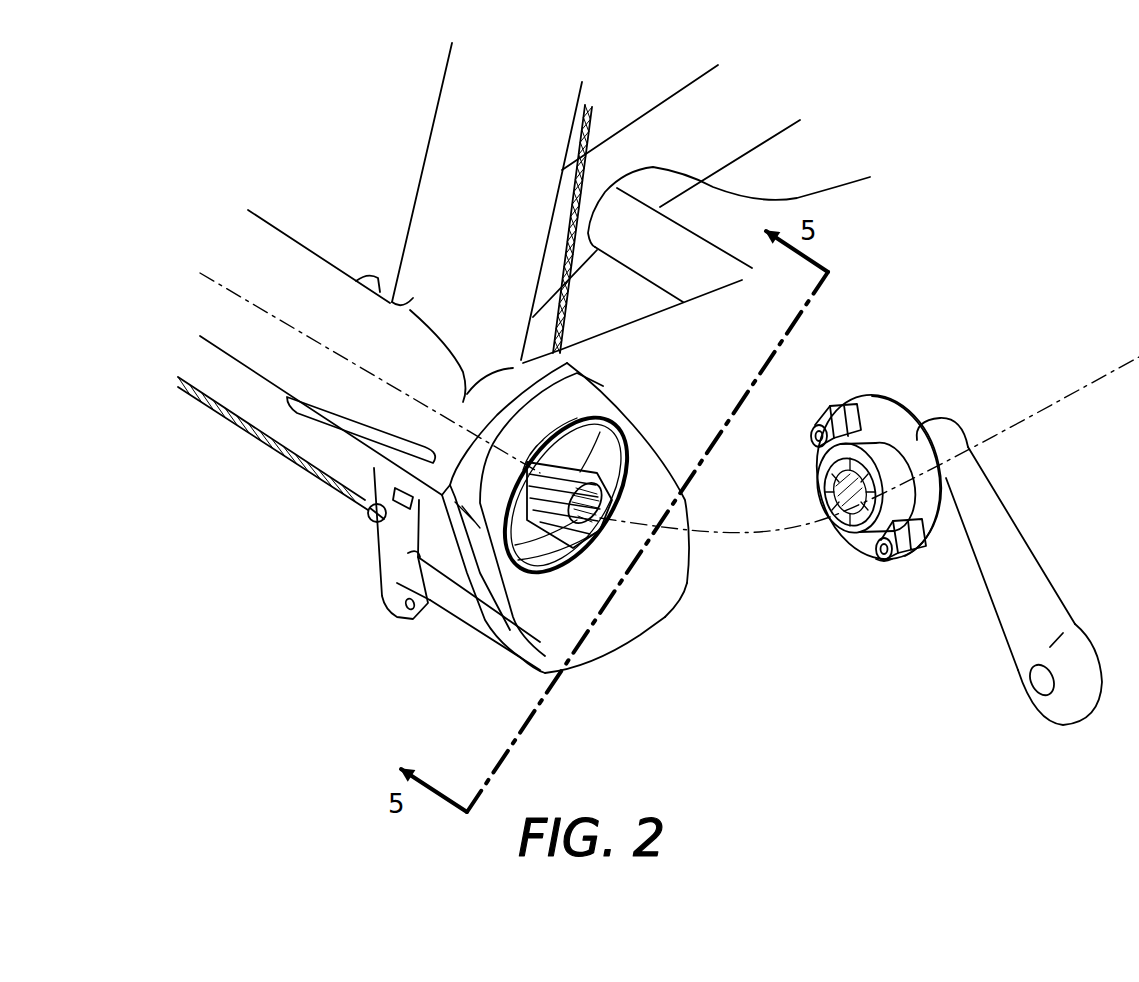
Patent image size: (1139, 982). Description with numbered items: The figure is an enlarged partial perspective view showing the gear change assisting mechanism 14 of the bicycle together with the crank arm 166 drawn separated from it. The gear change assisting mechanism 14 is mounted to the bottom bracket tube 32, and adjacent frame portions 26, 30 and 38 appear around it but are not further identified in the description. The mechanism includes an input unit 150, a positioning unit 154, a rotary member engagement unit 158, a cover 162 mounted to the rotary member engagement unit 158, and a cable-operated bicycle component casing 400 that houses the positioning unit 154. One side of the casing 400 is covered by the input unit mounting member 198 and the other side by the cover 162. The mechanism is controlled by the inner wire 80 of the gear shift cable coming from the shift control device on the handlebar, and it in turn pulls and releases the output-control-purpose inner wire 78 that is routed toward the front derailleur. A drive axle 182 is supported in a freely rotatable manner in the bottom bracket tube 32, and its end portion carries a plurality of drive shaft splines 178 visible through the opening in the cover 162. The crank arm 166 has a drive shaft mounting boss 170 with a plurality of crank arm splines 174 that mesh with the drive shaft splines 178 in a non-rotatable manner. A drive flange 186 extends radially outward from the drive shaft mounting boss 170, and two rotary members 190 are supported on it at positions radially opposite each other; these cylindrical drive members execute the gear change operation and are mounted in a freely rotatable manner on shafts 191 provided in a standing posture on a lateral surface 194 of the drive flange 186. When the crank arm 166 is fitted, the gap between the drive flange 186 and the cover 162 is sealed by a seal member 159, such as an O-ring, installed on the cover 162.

The gear change assisting mechanism 14 is at (616, 545).
The down tube 26 is at (263, 256).
The seat tube 30 is at (470, 113).
The bottom bracket tube 32 is at (380, 293).
The seat stay 38 is at (653, 120).
The output-control-purpose inner wire 78 is at (850, 180).
The inner wire 80 is at (242, 428).
The input unit 150 is at (376, 547).
The positioning unit 154 is at (428, 634).
The rotary member engagement unit 158 is at (565, 679).
The seal member 159 is at (603, 472).
The cover 162 is at (665, 588).
The crank arm 166 is at (981, 630).
The drive shaft mounting boss 170 is at (993, 563).
The crank arm splines 174 is at (826, 491).
The drive shaft splines 178 is at (607, 424).
The drive axle 182 is at (495, 403).
The drive flange 186 is at (877, 395).
The rotary members 190 is at (827, 424).
The shafts 191 is at (880, 562).
The lateral surface 194 is at (909, 487).
The input unit mounting member 198 is at (364, 514).
The cable-operated bicycle component casing 400 is at (480, 629).